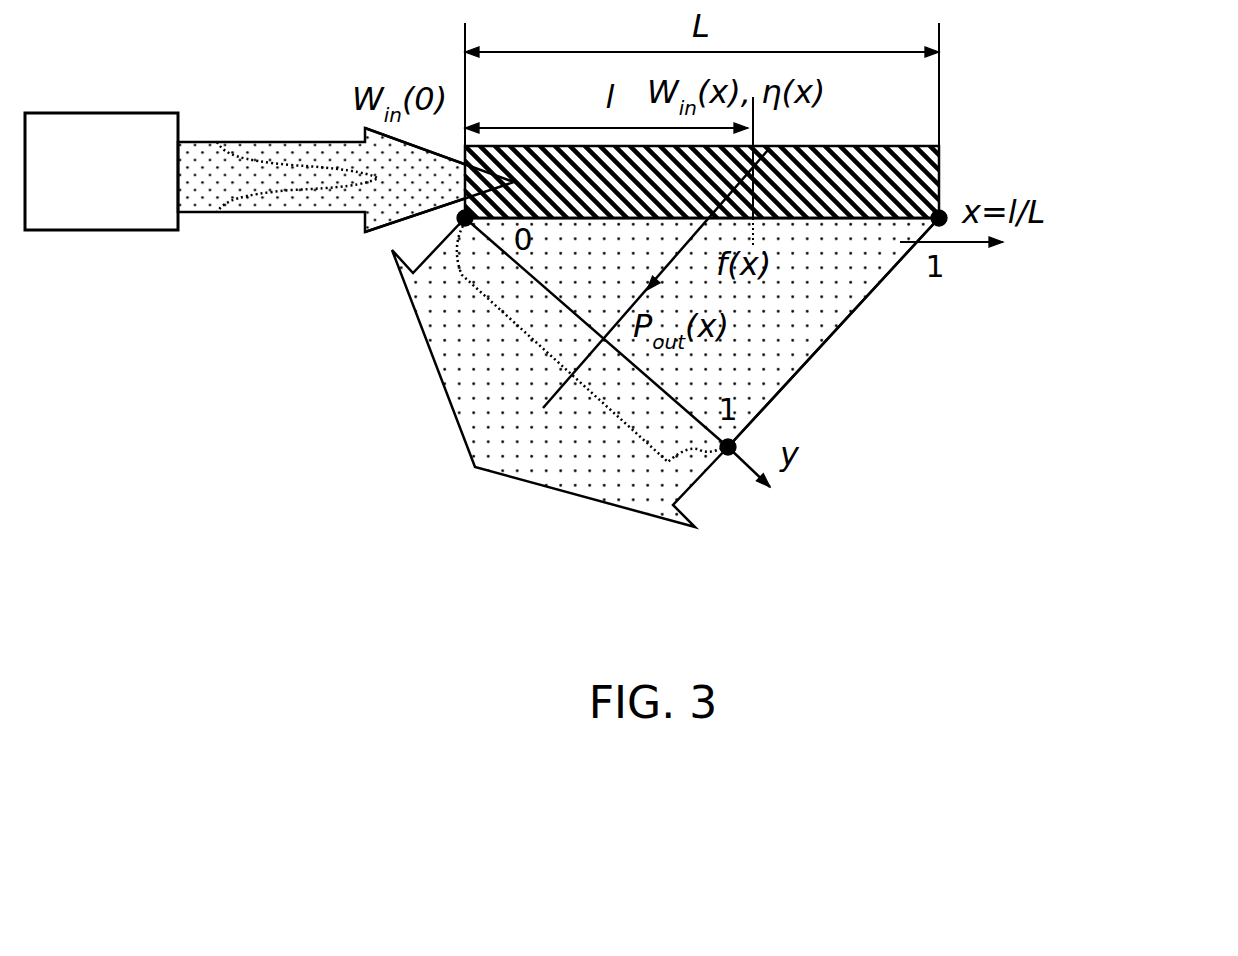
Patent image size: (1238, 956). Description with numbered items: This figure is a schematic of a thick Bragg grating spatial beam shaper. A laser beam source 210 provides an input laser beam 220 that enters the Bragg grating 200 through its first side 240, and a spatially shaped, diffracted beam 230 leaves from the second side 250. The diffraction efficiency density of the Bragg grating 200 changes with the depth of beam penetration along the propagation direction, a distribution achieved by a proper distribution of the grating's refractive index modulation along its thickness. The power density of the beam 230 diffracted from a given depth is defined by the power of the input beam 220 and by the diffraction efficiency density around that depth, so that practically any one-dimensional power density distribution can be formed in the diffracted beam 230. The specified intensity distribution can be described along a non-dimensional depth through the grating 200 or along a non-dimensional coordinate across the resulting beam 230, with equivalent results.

The Bragg grating 200 is at (877, 182).
The laser beam source 210 is at (101, 171).
The input laser beam 220 is at (277, 213).
The spatially shaped beam 230 is at (797, 377).
The first side 240 is at (458, 210).
The second side 250 is at (866, 220).